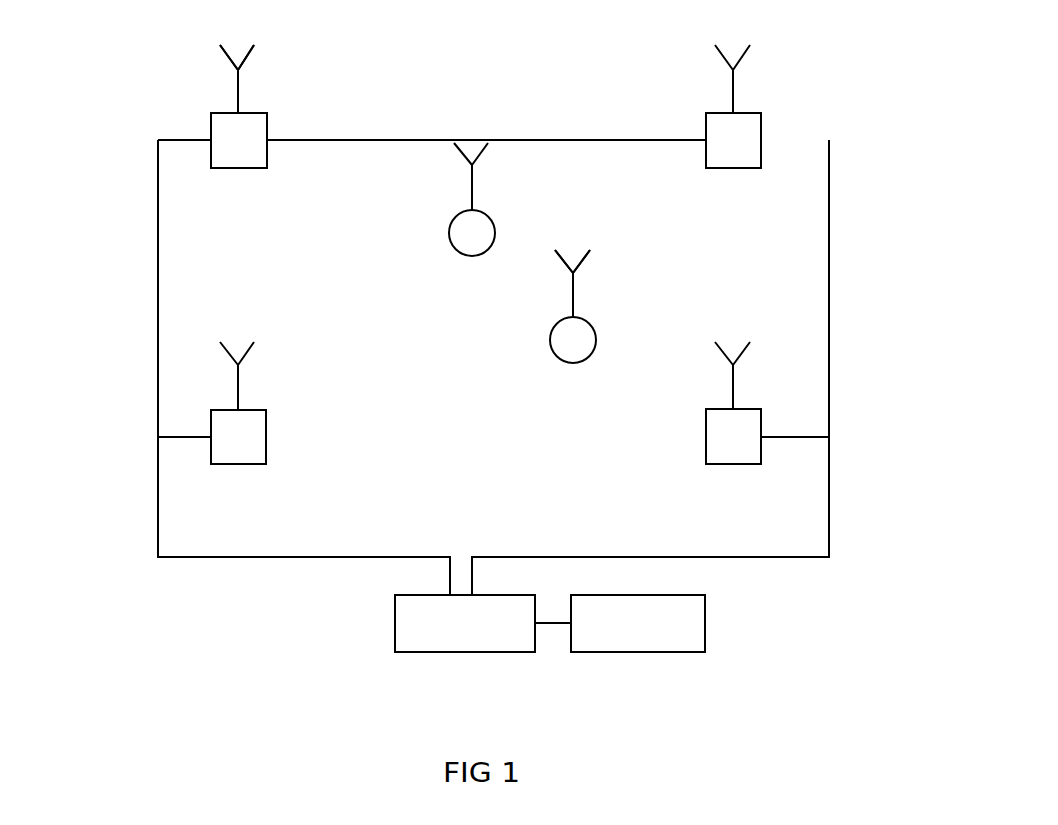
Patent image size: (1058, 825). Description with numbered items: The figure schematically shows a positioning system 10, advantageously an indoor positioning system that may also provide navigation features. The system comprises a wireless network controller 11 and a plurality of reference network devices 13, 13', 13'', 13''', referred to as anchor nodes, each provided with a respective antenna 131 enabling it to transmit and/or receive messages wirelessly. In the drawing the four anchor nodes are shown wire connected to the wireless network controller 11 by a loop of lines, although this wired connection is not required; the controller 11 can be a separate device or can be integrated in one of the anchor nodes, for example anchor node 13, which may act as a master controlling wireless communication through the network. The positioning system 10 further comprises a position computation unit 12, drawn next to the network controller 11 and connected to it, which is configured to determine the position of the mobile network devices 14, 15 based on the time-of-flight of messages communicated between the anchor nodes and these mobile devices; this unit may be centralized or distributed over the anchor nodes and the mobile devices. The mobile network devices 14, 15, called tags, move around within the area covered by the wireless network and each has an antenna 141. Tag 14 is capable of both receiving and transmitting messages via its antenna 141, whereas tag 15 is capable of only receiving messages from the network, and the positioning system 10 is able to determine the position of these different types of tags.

The positioning system 10 is at (203, 612).
The wireless network controller 11 is at (428, 652).
The position computation unit 12 is at (637, 652).
The reference network device 13 is at (165, 98).
The reference network device 13' is at (162, 400).
The reference network device 13'' is at (825, 98).
The reference network device 13''' is at (829, 400).
The antenna 131 is at (238, 92).
The mobile network device 14 is at (598, 340).
The antenna 141 is at (573, 298).
The mobile network device 15 is at (495, 232).